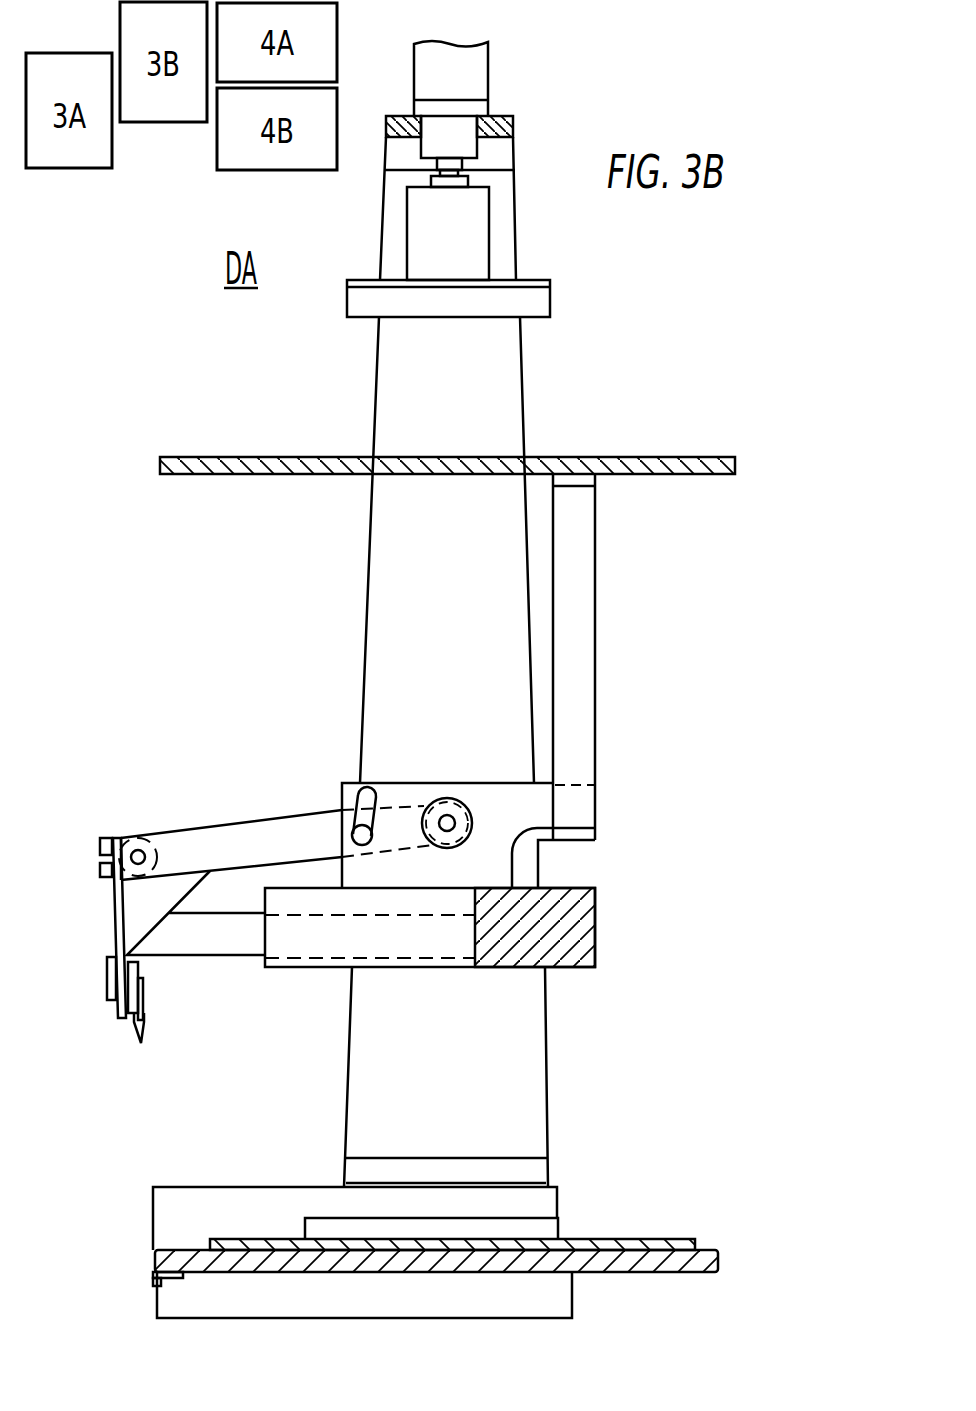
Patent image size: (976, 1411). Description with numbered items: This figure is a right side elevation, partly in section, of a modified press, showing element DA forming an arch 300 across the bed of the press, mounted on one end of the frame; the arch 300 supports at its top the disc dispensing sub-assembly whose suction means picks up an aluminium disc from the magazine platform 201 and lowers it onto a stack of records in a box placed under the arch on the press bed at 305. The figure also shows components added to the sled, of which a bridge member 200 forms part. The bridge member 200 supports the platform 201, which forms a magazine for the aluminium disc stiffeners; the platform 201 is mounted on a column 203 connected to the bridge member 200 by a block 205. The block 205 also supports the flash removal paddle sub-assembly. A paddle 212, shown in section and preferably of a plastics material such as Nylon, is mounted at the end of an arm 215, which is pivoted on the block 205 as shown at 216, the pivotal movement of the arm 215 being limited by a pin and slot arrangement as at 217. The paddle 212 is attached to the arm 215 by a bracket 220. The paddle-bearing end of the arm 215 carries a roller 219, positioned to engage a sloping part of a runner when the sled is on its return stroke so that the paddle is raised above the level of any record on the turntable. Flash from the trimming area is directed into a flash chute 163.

The arch 300 is at (534, 446).
The platform 201 is at (689, 457).
The column 203 is at (597, 568).
The block 205 is at (520, 840).
The pivot 216 is at (455, 822).
The pin and slot arrangement 217 is at (357, 795).
The arm 215 is at (247, 823).
The roller 219 is at (145, 838).
The bracket 220 is at (162, 928).
The bridge member 200 is at (596, 941).
The paddle 212 is at (122, 1025).
The flash chute 163 is at (143, 1030).
The press bed location 305 is at (593, 1240).